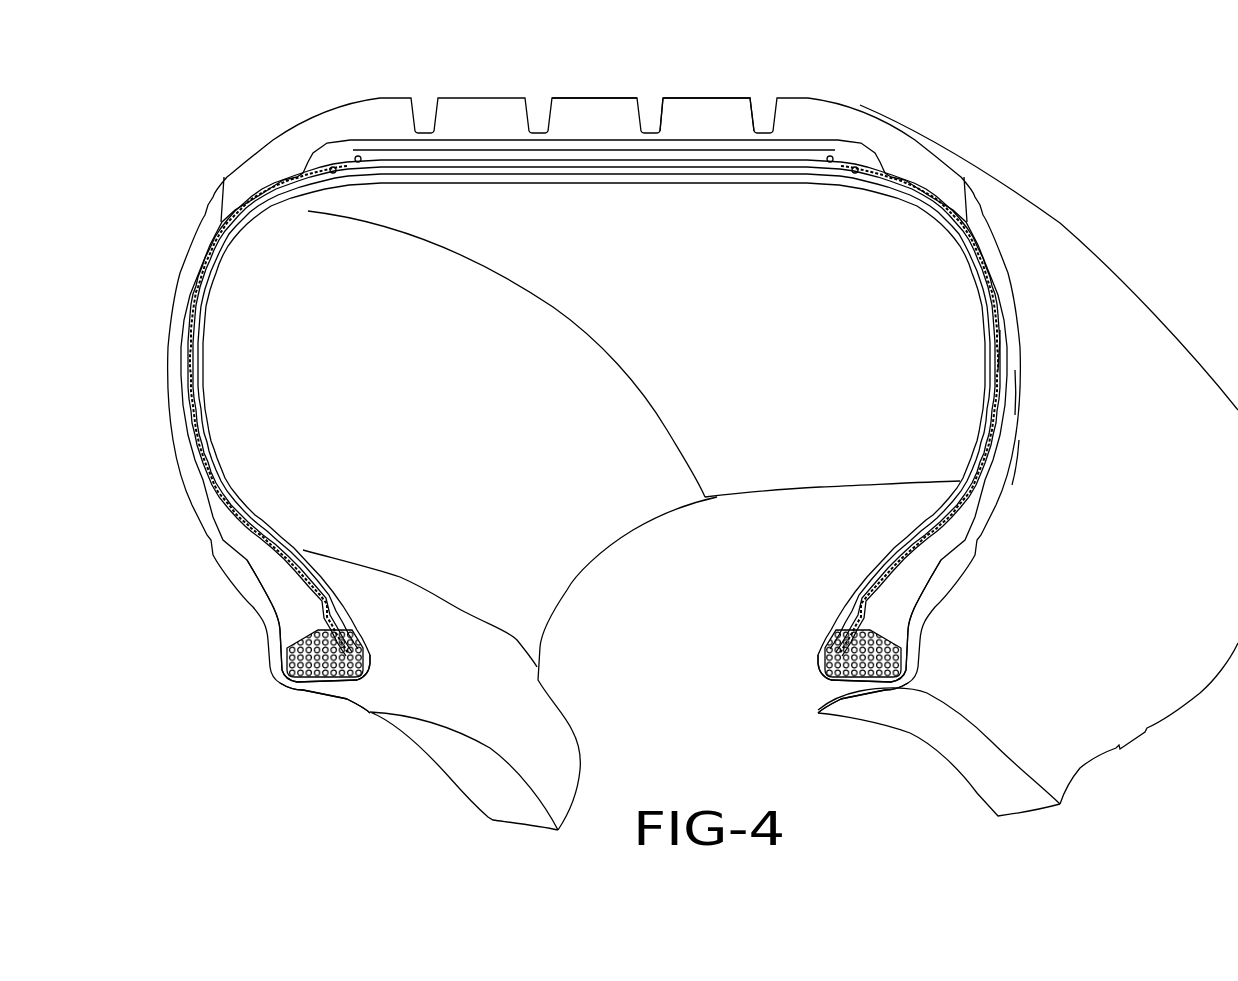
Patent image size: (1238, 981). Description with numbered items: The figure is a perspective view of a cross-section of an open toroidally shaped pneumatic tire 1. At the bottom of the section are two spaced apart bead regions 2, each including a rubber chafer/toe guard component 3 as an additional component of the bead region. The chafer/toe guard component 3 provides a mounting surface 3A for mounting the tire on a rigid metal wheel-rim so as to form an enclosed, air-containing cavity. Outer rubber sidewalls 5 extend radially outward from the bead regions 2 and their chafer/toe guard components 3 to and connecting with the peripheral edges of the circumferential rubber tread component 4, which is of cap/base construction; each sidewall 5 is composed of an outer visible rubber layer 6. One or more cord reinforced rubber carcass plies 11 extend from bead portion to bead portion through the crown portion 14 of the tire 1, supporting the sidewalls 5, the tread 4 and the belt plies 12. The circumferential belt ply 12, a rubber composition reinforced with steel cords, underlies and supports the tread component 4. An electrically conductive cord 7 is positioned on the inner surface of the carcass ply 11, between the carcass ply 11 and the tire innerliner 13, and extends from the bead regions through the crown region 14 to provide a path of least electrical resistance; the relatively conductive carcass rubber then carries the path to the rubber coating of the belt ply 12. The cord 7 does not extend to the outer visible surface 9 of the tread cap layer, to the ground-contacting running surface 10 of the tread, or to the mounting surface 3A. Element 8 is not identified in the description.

The pneumatic tire 1 is at (1086, 188).
The bead region 2 is at (347, 653).
The rubber chafer/toe guard component 3 is at (273, 670).
The mounting surface 3A is at (323, 693).
The circumferential rubber tread component 4 is at (524, 90).
The outer rubber sidewall 5 is at (1024, 461).
The outer visible rubber layer 6 is at (1013, 400).
The electrically conductive cord 7 is at (987, 447).
The belt 8 is at (797, 140).
The outer visible surface of the tread cap layer 9 is at (708, 124).
The running surface of the tread 10 is at (597, 97).
The carcass ply 11 is at (1000, 343).
The belt ply 12 is at (622, 162).
The tire innerliner 13 is at (972, 283).
The crown portion 14 is at (708, 167).